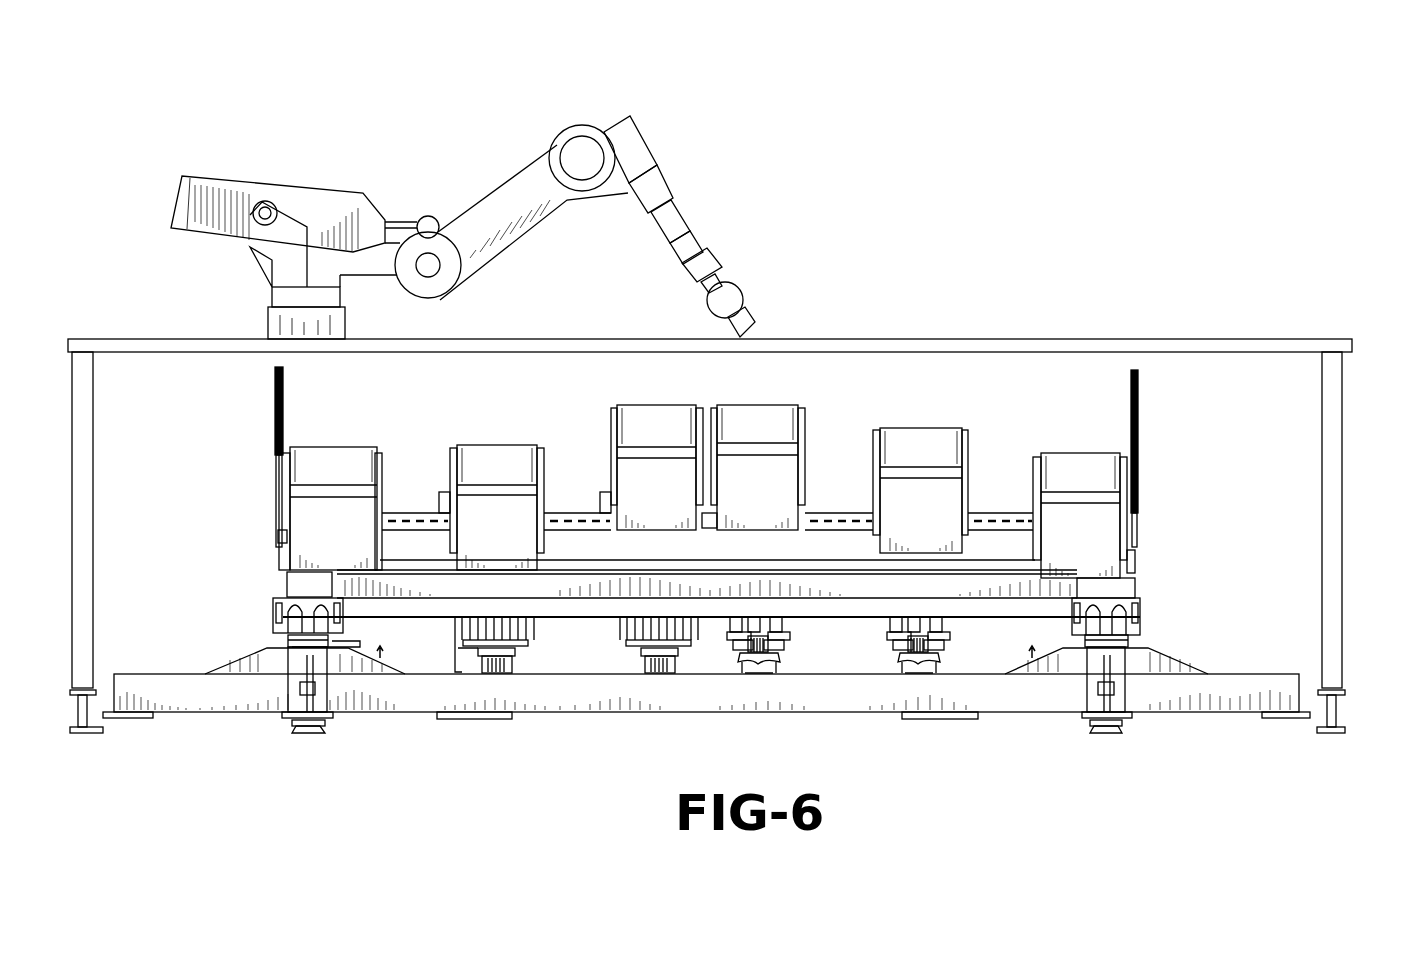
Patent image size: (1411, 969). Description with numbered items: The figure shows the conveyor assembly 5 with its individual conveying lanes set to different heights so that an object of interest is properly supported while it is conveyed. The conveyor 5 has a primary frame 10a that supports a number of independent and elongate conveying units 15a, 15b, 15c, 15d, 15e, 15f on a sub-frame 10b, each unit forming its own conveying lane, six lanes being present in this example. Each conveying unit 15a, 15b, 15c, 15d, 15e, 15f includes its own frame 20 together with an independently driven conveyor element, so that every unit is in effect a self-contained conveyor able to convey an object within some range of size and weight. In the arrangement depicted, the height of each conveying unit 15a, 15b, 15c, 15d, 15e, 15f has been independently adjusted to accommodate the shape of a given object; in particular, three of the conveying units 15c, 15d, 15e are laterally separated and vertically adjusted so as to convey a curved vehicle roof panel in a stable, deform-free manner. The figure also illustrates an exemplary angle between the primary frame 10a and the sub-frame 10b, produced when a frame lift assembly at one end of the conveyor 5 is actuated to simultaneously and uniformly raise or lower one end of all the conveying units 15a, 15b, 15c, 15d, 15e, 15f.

The conveyor assembly 5 is at (1025, 185).
The primary frame 10a is at (1198, 725).
The sub-frame 10b is at (1143, 576).
The frame 20 is at (1143, 492).
The conveying unit 15a is at (330, 437).
The conveying unit 15b is at (500, 440).
The conveying unit 15c is at (633, 390).
The conveying unit 15d is at (770, 397).
The conveying unit 15e is at (918, 410).
The conveying unit 15f is at (1077, 442).